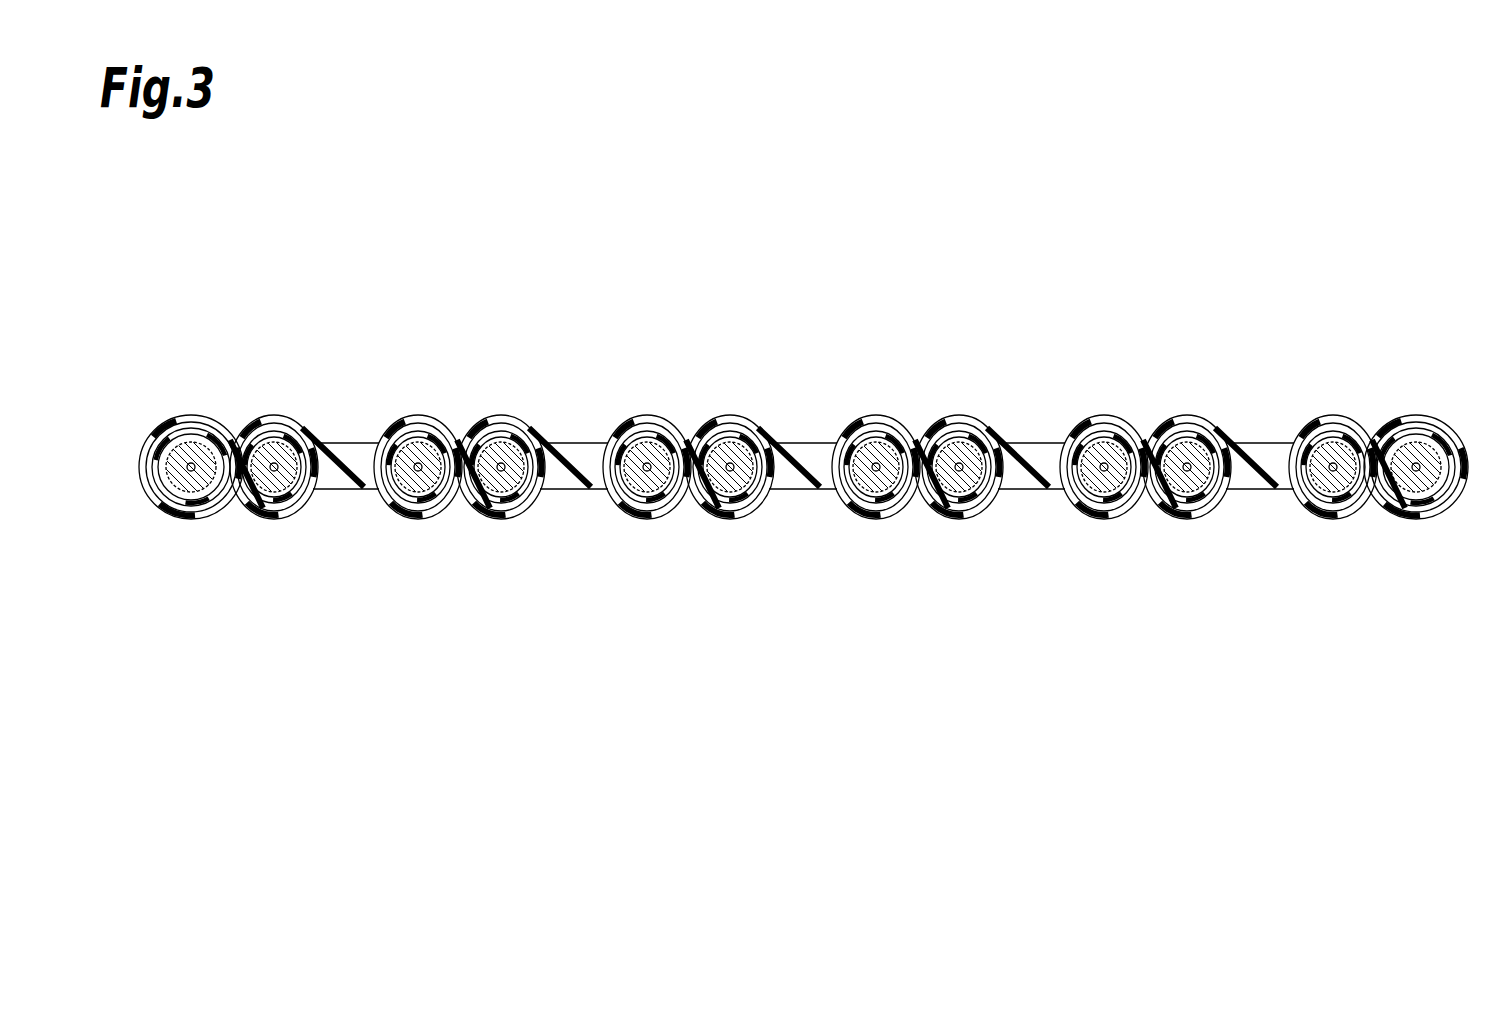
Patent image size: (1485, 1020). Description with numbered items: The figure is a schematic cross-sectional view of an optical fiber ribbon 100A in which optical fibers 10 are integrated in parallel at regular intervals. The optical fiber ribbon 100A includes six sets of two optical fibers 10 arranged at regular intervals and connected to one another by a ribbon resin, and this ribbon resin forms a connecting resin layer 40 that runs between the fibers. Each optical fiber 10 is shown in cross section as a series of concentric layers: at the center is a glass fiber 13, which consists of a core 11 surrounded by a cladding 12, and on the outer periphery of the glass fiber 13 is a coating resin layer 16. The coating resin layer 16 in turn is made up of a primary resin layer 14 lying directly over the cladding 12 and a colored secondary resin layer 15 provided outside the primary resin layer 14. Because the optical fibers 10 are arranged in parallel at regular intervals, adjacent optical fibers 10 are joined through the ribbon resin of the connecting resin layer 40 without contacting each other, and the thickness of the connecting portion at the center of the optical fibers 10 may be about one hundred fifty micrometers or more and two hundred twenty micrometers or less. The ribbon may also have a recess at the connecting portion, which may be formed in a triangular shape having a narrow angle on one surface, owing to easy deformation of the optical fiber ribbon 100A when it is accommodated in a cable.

The optical fiber 10 is at (155, 640).
The core 11 is at (192, 471).
The cladding 12 is at (200, 477).
The glass fiber 13 is at (140, 600).
The primary resin layer 14 is at (212, 488).
The colored secondary resin layer 15 is at (228, 490).
The coating resin layer 16 is at (245, 600).
The connecting resin layer 40 is at (580, 443).
The optical fiber ribbon 100A is at (1272, 362).